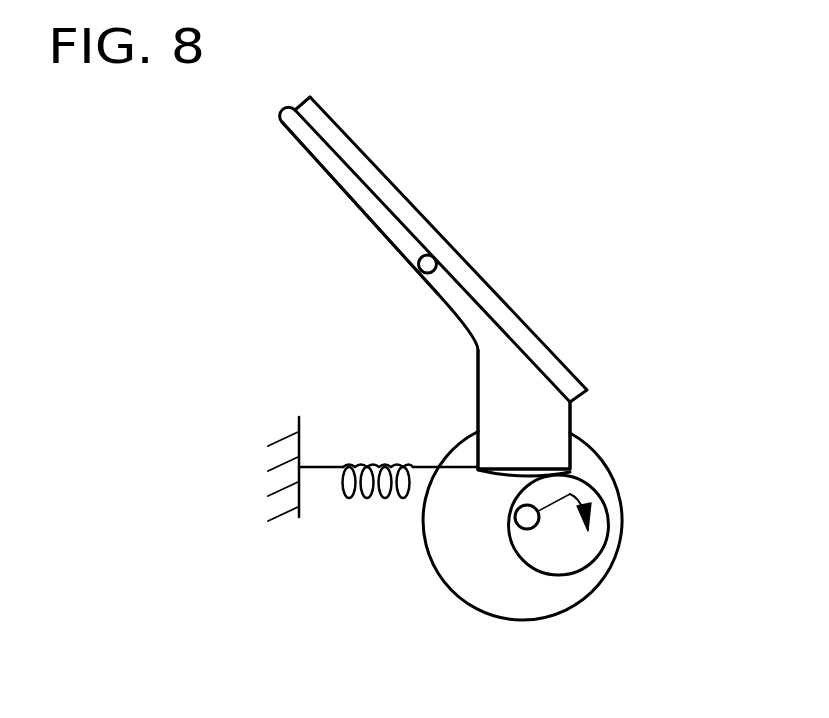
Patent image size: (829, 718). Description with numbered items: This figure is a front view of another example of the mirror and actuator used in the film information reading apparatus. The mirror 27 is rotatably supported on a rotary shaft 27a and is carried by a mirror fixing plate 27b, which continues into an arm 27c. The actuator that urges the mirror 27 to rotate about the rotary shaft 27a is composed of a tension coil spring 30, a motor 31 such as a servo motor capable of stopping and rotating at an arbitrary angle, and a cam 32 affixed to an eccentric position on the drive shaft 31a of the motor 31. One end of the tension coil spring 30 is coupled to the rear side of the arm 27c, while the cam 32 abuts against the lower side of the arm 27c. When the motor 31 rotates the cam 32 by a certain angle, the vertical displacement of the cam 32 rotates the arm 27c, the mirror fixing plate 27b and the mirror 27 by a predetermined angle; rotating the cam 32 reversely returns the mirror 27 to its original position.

The mirror 27 is at (385, 187).
The rotary shaft 27a is at (432, 256).
The mirror fixing plate 27b is at (387, 227).
The arm 27c is at (488, 392).
The tension coil spring 30 is at (360, 496).
The motor 31 is at (565, 593).
The drive shaft 31a is at (572, 494).
The cam 32 is at (520, 548).